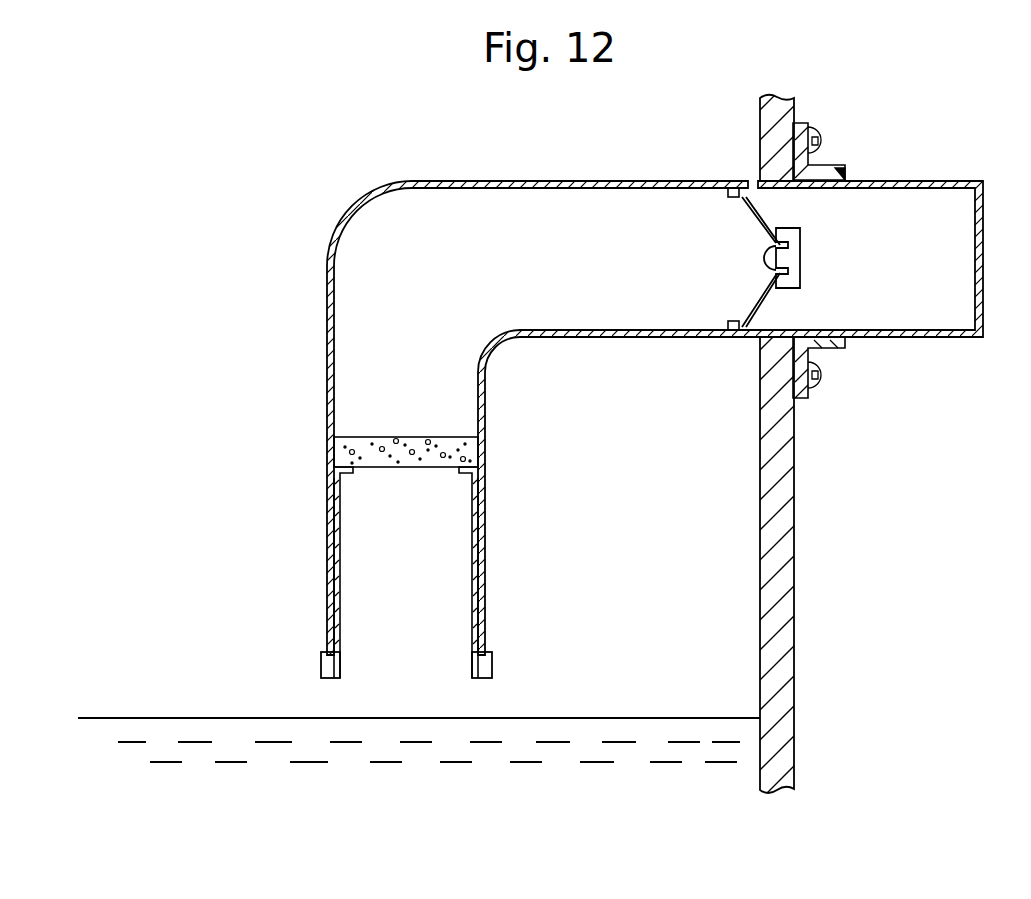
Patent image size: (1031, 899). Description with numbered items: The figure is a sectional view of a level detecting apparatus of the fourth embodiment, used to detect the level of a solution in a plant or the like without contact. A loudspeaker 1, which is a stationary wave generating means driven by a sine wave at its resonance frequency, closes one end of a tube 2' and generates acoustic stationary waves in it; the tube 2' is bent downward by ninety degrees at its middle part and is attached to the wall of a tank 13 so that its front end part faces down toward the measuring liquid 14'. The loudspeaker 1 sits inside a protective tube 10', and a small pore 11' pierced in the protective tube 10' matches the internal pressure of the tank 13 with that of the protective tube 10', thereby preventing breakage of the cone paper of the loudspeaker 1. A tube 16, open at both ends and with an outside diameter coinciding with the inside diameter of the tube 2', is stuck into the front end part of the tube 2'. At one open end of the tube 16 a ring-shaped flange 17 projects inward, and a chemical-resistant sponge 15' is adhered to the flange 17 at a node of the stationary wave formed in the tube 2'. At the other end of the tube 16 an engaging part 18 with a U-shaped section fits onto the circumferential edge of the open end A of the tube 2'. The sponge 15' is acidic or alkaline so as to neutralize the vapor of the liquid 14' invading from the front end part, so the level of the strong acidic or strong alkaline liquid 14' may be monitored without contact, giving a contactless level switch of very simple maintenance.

The tube 2' is at (537, 381).
The protective tube 10' is at (739, 378).
The small pore 11' is at (713, 216).
The loudspeaker 1 is at (806, 258).
The chemical-resistant sponge 15' is at (406, 413).
The tube 16 is at (480, 545).
The ring-shaped flange 17 is at (352, 474).
The engaging part 18 is at (327, 655).
The tank 13 is at (795, 611).
The measuring liquid 14' is at (419, 757).
The open end A is at (412, 666).